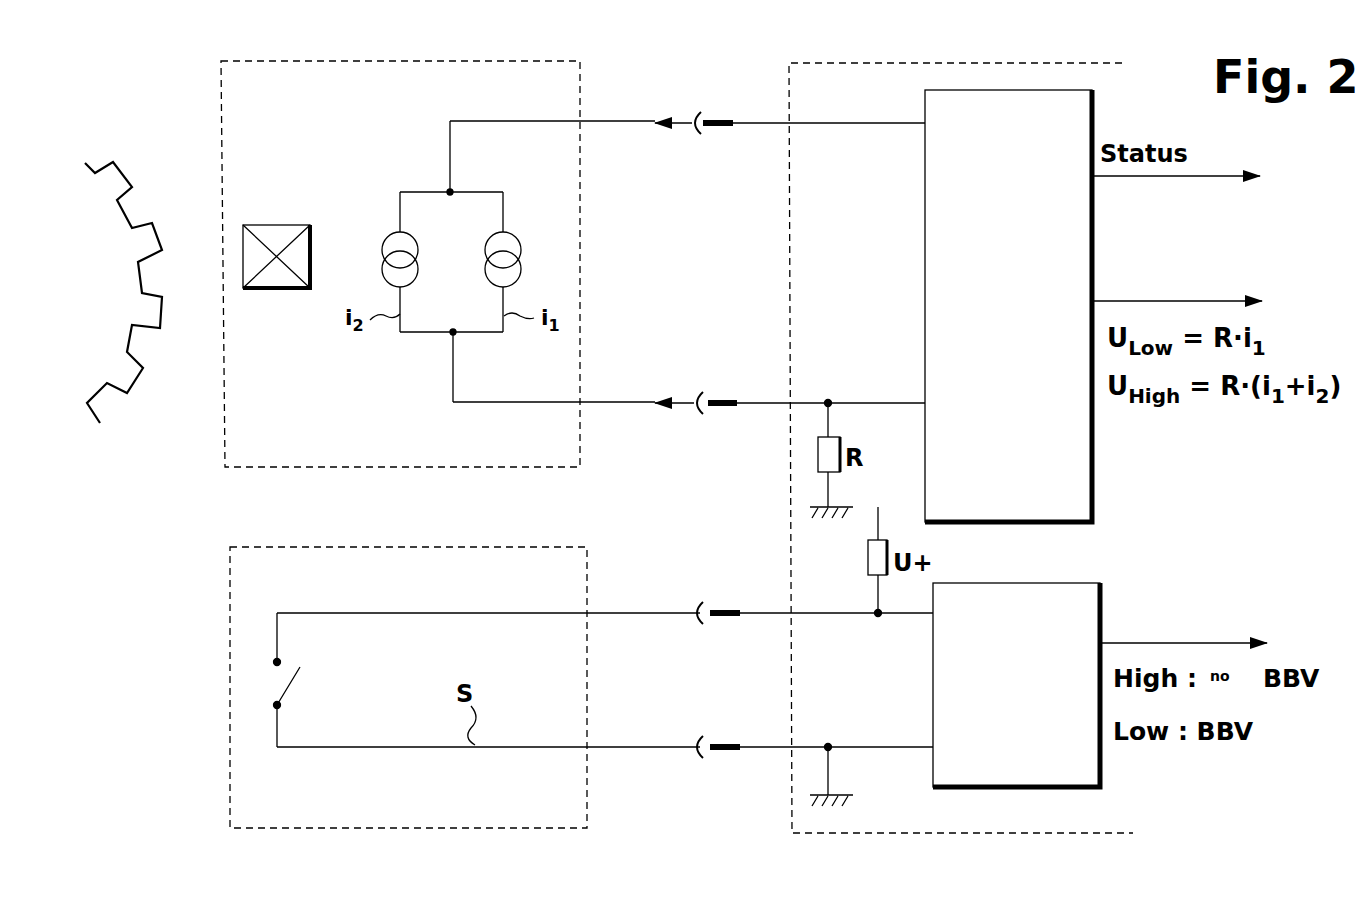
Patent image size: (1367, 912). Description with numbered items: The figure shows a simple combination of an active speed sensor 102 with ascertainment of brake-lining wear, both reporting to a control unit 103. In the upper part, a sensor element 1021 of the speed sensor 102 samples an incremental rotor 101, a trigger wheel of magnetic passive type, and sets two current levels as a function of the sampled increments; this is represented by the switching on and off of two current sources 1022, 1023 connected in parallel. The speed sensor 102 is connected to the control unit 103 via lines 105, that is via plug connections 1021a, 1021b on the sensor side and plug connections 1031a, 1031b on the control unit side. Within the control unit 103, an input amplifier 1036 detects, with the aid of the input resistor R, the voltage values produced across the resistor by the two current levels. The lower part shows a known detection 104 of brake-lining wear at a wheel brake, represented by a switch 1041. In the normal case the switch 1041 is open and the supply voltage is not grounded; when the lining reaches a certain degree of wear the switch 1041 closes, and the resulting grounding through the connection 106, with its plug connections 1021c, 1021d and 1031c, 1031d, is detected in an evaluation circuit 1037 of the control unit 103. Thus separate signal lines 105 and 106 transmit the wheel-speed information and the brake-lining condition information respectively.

The incremental rotor 101 is at (132, 382).
The active speed sensor 102 is at (432, 60).
The control unit 103 is at (960, 62).
The brake-lining wear detection 104 is at (466, 828).
The lines 105 is at (618, 125).
The connection 106 is at (630, 615).
The sensor element 1021 is at (283, 282).
The current source 1022 is at (390, 241).
The current source 1023 is at (540, 241).
The plug connection 1021a is at (694, 120).
The plug connection 1021b is at (697, 406).
The plug connection 1021c is at (696, 612).
The plug connection 1021d is at (697, 750).
The plug connection 1031a is at (718, 126).
The plug connection 1031b is at (722, 401).
The plug connection 1031c is at (722, 616).
The plug connection 1031d is at (722, 746).
The input amplifier 1036 is at (931, 242).
The evaluation circuit 1037 is at (935, 686).
The switch 1041 is at (290, 690).